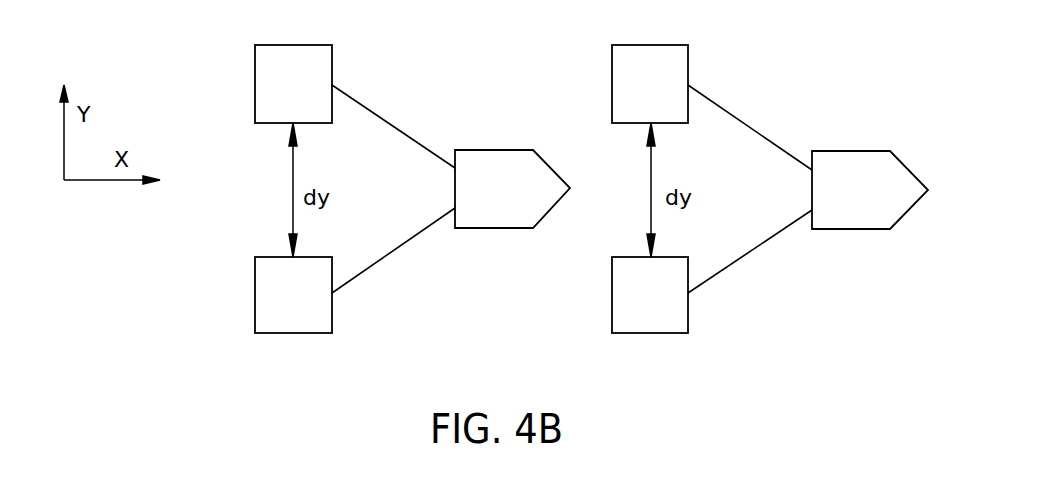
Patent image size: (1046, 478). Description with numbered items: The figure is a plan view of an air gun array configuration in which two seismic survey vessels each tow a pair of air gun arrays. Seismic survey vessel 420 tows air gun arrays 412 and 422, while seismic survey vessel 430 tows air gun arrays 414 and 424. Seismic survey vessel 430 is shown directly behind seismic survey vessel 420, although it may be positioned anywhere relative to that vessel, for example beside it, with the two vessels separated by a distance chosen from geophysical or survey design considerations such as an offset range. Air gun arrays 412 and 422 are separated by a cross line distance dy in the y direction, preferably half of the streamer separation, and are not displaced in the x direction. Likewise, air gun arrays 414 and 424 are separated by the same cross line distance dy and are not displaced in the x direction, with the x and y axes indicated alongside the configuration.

The air gun array 414 is at (315, 98).
The air gun array 424 is at (315, 308).
The seismic survey vessel 430 is at (481, 203).
The air gun array 412 is at (672, 98).
The air gun array 422 is at (672, 308).
The seismic survey vessel 420 is at (840, 205).